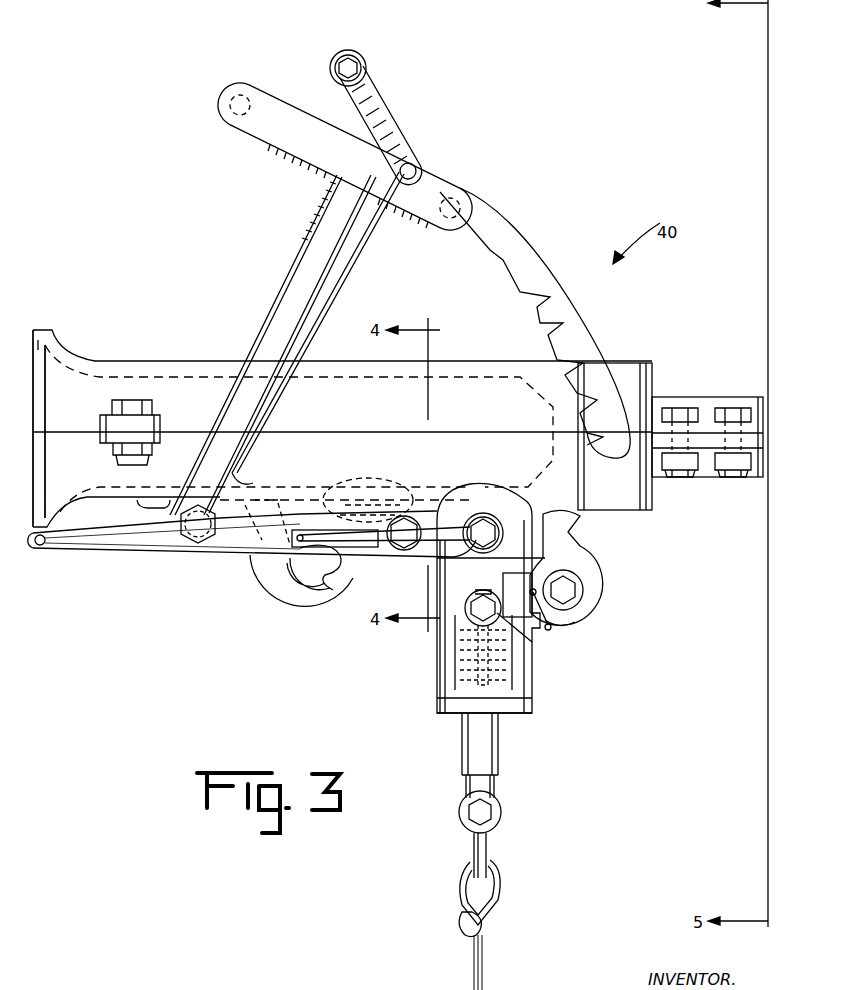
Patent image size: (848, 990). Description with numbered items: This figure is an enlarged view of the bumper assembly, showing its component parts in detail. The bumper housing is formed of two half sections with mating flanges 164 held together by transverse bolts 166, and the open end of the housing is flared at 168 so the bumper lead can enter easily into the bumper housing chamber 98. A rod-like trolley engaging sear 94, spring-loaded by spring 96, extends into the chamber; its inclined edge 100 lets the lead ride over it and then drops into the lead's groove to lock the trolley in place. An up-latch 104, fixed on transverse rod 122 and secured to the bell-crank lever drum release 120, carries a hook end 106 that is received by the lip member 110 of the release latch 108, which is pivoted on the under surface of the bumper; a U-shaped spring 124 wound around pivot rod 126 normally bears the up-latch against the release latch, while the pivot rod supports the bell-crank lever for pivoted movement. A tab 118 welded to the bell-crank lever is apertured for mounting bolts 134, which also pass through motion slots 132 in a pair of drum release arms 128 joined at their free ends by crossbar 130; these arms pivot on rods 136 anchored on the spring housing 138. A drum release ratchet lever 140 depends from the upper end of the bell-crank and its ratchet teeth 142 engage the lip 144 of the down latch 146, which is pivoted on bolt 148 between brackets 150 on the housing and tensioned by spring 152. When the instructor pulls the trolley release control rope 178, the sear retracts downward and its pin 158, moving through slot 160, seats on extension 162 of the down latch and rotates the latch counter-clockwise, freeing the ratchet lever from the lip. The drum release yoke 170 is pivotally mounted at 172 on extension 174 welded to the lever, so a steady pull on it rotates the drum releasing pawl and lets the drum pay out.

The trolley engaging sear 94 is at (486, 748).
The spring 96 is at (440, 672).
The bumper housing chamber 98 is at (490, 400).
The inclined edge 100 is at (482, 487).
The up-latch 104 is at (279, 570).
The hook end 106 is at (340, 571).
The release latch 108 is at (365, 487).
The lip member 110 is at (313, 572).
The tab 118 is at (380, 502).
The bell-crank lever drum release 120 is at (300, 292).
The transverse rod 122 is at (247, 537).
The U-shaped spring 124 is at (160, 508).
The pivot rod 126 is at (202, 510).
The drum release arms 128 is at (110, 546).
The crossbar 130 is at (40, 548).
The motion slots 132 is at (425, 525).
The mounting bolts 134 is at (405, 530).
The rods 136 is at (490, 537).
The spring housing 138 is at (440, 658).
The drum release ratchet lever 140 is at (507, 223).
The ratchet teeth 142 is at (560, 323).
The lip 144 is at (584, 530).
The down latch 146 is at (583, 613).
The bolt 148 is at (566, 590).
The brackets 150 is at (511, 572).
The spring 152 is at (552, 628).
The pin 158 is at (510, 623).
The slot 160 is at (484, 594).
The extension 162 is at (458, 646).
The mating flanges 164 is at (715, 428).
The transverse bolts 166 is at (681, 408).
The flared open end 168 is at (34, 343).
The drum release yoke 170 is at (392, 150).
The pivot 172 is at (352, 60).
The extension 174 is at (312, 128).
The trolley release control rope 178 is at (476, 975).